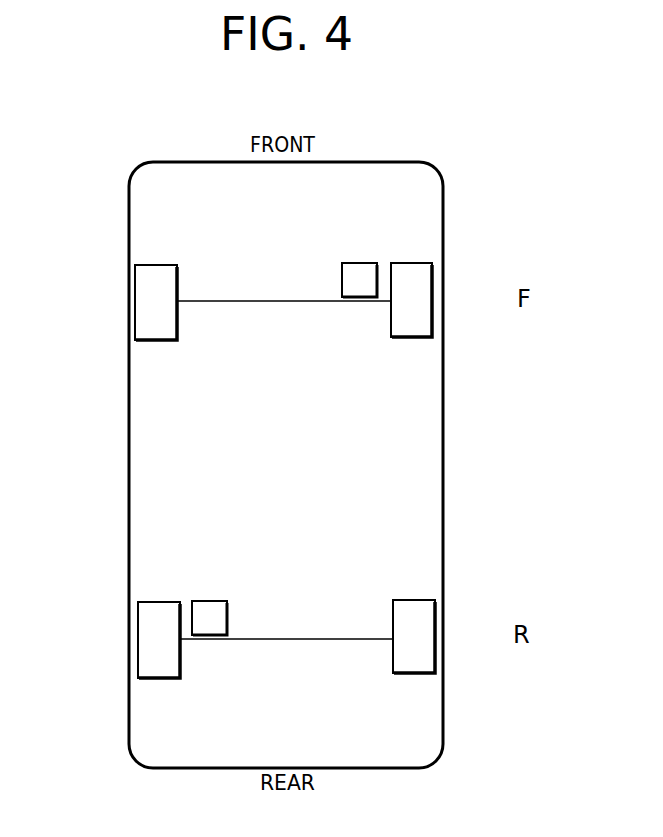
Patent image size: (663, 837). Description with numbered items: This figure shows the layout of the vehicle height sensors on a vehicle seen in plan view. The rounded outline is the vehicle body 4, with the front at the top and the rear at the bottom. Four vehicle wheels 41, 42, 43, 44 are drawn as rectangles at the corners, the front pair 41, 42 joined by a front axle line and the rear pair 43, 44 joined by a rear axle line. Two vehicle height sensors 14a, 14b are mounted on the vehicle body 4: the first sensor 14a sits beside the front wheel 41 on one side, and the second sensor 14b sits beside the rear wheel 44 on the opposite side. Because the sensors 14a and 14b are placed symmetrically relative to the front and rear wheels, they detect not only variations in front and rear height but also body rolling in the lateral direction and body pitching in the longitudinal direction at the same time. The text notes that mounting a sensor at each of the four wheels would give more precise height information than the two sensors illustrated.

The vehicle body 4 is at (427, 453).
The vehicle wheel 41 is at (420, 292).
The vehicle wheel 42 is at (136, 310).
The vehicle wheel 43 is at (420, 653).
The vehicle wheel 44 is at (140, 645).
The vehicle height sensor 14a is at (357, 263).
The vehicle height sensor 14b is at (207, 602).